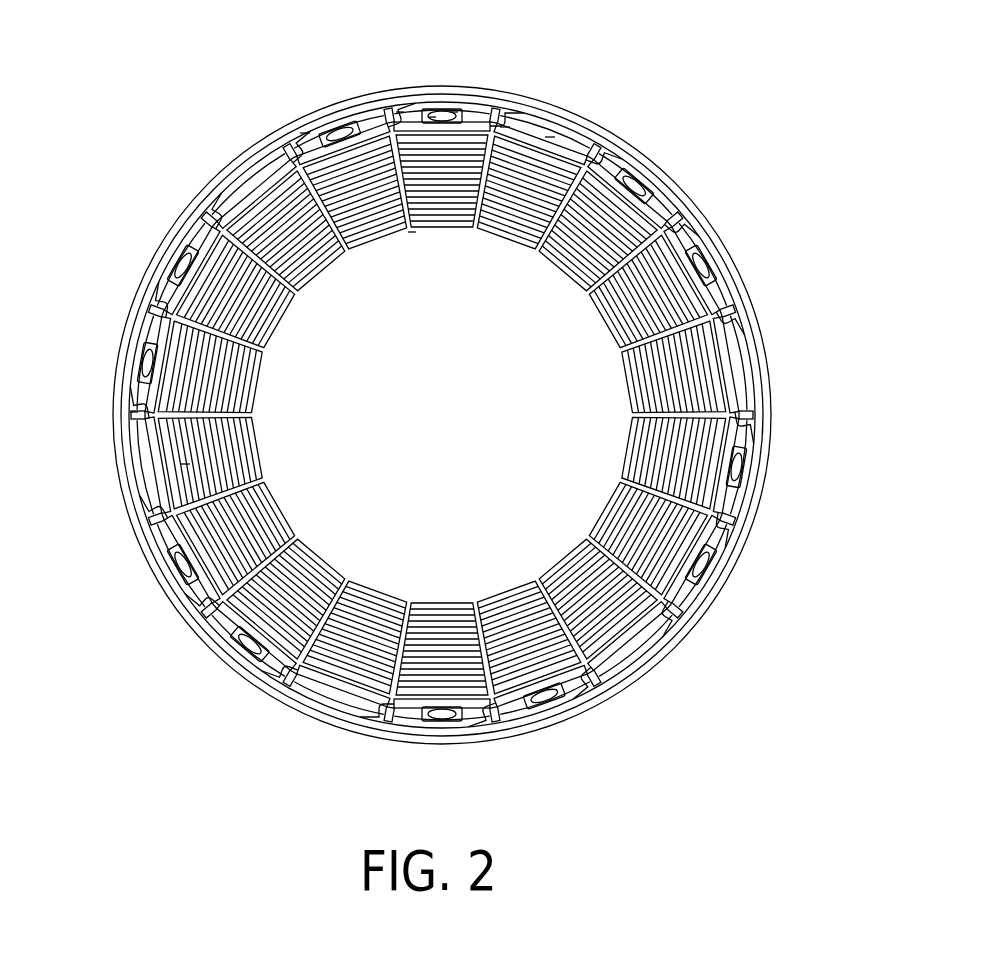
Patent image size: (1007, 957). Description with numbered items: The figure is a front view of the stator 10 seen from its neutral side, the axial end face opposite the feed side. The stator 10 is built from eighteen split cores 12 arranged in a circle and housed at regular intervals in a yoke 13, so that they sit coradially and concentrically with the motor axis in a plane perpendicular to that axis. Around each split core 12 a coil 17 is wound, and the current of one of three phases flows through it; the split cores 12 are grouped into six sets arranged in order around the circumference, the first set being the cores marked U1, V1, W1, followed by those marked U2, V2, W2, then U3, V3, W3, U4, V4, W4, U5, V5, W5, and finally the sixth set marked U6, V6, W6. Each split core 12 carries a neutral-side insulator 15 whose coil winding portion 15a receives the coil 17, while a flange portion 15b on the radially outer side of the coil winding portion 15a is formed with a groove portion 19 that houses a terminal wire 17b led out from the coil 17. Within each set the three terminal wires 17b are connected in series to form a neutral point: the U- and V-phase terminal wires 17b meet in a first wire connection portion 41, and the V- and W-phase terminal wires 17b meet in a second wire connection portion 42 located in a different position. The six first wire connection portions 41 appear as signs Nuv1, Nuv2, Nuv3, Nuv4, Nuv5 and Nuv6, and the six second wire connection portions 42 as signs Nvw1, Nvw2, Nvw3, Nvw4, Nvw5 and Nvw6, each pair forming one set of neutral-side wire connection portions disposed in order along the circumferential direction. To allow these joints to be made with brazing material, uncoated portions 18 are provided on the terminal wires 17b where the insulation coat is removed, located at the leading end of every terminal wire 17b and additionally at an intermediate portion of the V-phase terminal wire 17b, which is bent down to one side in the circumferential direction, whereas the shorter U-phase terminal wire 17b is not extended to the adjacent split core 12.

The stator 10 is at (742, 684).
The split core 12 is at (455, 232).
The yoke 13 is at (300, 710).
The neutral-side insulator 15 is at (134, 412).
The coil winding portion 15a is at (412, 232).
The flange portion 15b is at (400, 112).
The coil 17 is at (185, 464).
The terminal wire 17b is at (505, 127).
The uncoated portion 18 is at (455, 112).
The groove portion 19 is at (550, 137).
The first wire connection portion 41 is at (305, 133).
The second wire connection portion 42 is at (430, 112).
The first wire connection portion of the first set Nuv1 is at (333, 128).
The first wire connection portion of the second set Nuv2 is at (140, 356).
The first wire connection portion of the third set Nuv3 is at (250, 650).
The first wire connection portion of the fourth set Nuv4 is at (548, 706).
The first wire connection portion of the fifth set Nuv5 is at (748, 455).
The first wire connection portion of the sixth set Nuv6 is at (635, 172).
The second wire connection portion of the first set Nvw1 is at (437, 112).
The second wire connection portion of the second set Nvw2 is at (180, 266).
The second wire connection portion of the third set Nvw3 is at (178, 566).
The second wire connection portion of the fourth set Nvw4 is at (440, 722).
The second wire connection portion of the fifth set Nvw5 is at (712, 560).
The second wire connection portion of the sixth set Nvw6 is at (712, 255).
The U-phase split core of the first split core portion U1 is at (373, 186).
The U-phase split core of the second split core portion U2 is at (213, 355).
The U-phase split core of the third split core portion U3 is at (270, 593).
The U-phase split core of the fourth split core portion U4 is at (510, 647).
The U-phase split core of the fifth split core portion U5 is at (673, 474).
The U-phase split core of the sixth split core portion U6 is at (614, 236).
The V-phase split core of the first split core portion V1 is at (459, 185).
The V-phase split core of the second split core portion V2 is at (236, 277).
The V-phase split core of the third split core portion V3 is at (225, 524).
The V-phase split core of the fourth split core portion V4 is at (425, 643).
The V-phase split core of the fifth split core portion V5 is at (648, 553).
The V-phase split core of the sixth split core portion V6 is at (661, 306).
The W-phase split core of the first split core portion W1 is at (542, 192).
The W-phase split core of the second split core portion W2 is at (296, 218).
The W-phase split core of the third split core portion W3 is at (213, 441).
The W-phase split core of the fourth split core portion W4 is at (341, 641).
The W-phase split core of the fifth split core portion W5 is at (588, 615).
The W-phase split core of the sixth split core portion W6 is at (673, 388).